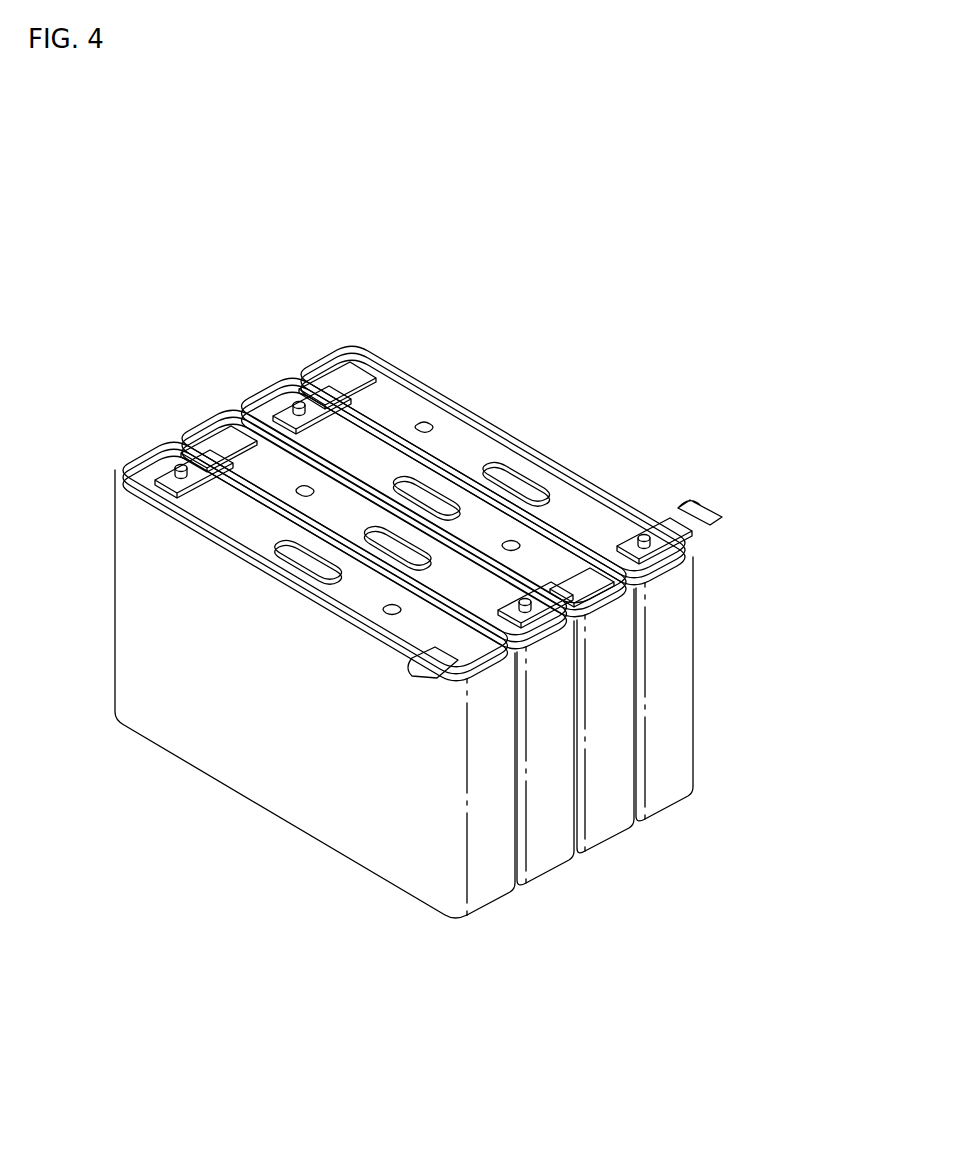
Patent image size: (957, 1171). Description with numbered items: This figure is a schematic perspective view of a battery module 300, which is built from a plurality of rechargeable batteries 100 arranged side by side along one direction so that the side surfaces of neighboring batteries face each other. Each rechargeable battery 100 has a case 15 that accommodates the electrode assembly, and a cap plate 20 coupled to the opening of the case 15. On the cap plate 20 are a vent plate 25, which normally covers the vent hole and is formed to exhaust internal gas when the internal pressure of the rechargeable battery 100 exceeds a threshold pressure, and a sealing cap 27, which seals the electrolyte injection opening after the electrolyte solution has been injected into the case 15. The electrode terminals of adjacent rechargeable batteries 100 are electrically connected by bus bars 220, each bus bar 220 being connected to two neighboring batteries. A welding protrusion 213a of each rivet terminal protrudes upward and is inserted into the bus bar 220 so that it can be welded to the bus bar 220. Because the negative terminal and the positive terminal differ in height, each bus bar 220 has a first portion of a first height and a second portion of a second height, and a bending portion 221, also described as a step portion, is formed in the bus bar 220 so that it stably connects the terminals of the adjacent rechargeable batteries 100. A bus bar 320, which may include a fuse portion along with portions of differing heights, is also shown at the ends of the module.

The battery module 300 is at (530, 388).
The rechargeable battery 100 is at (420, 910).
The case 15 is at (681, 795).
The cap plate 20 is at (346, 598).
The vent plate 25 is at (300, 566).
The sealing cap 27 is at (390, 612).
The bus bar 220 is at (345, 365).
The bending portion 221 is at (345, 382).
The welding protrusion 213a is at (297, 402).
The bus bar 320 is at (708, 508).